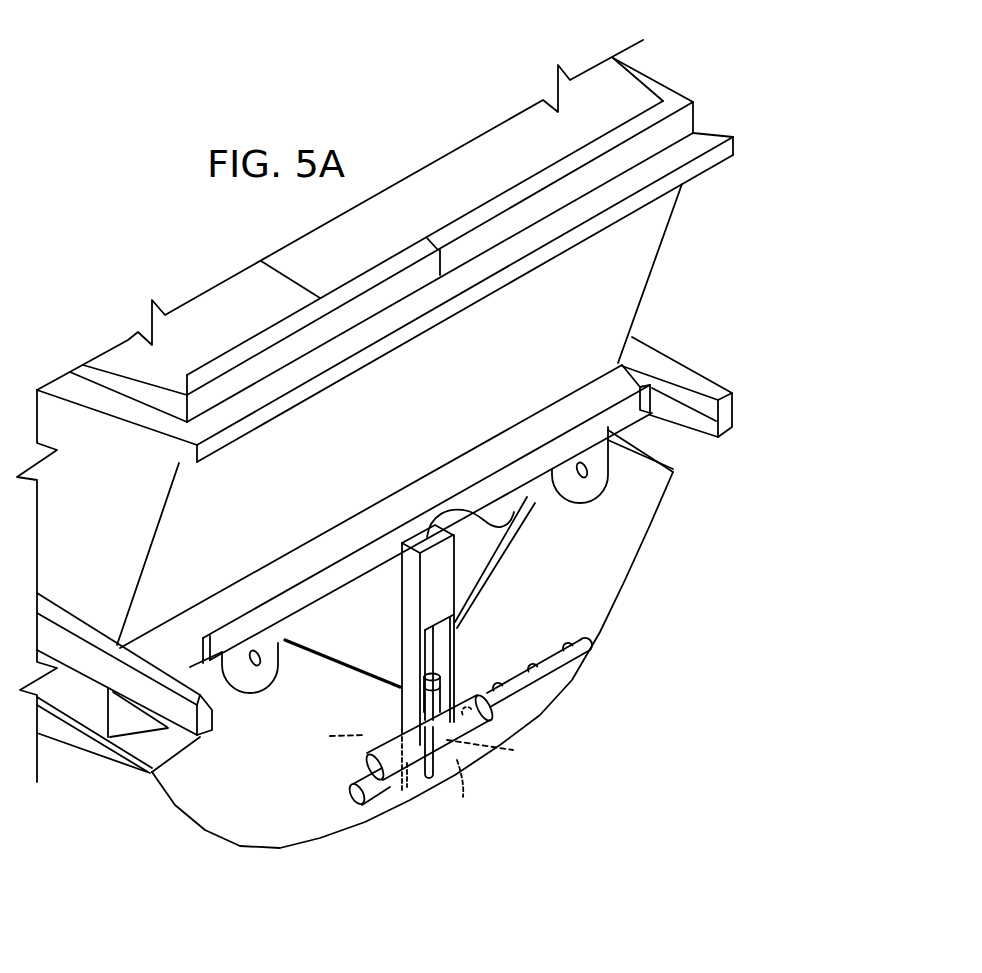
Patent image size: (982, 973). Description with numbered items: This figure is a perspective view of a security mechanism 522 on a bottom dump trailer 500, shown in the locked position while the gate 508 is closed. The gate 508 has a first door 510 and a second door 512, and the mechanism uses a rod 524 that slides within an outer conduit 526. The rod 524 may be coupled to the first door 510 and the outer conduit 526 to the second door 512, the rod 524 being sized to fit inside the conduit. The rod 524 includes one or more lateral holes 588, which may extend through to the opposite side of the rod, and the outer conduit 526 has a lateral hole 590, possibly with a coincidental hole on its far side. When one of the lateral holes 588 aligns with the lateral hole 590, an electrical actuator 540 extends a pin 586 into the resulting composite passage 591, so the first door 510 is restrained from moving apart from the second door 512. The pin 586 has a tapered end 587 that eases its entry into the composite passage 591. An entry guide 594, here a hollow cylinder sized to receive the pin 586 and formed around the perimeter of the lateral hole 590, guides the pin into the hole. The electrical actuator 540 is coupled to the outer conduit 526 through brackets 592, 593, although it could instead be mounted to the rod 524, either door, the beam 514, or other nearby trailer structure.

The bottom dump trailer 500 is at (753, 268).
The gate 508 is at (310, 869).
The first door 510 is at (126, 778).
The second door 512 is at (650, 498).
The beam 514 is at (507, 477).
The security mechanism 522 is at (500, 842).
The rod 524 is at (345, 785).
The outer conduit 526 is at (497, 733).
The electrical actuator 540 is at (428, 588).
The pin 586 is at (455, 707).
The tapered end 587 is at (430, 783).
The lateral holes 588 is at (547, 658).
The lateral hole 590 is at (473, 763).
The composite passage 591 is at (403, 782).
The bracket 592 is at (405, 690).
The bracket 593 is at (457, 637).
The entry guide 594 is at (418, 717).